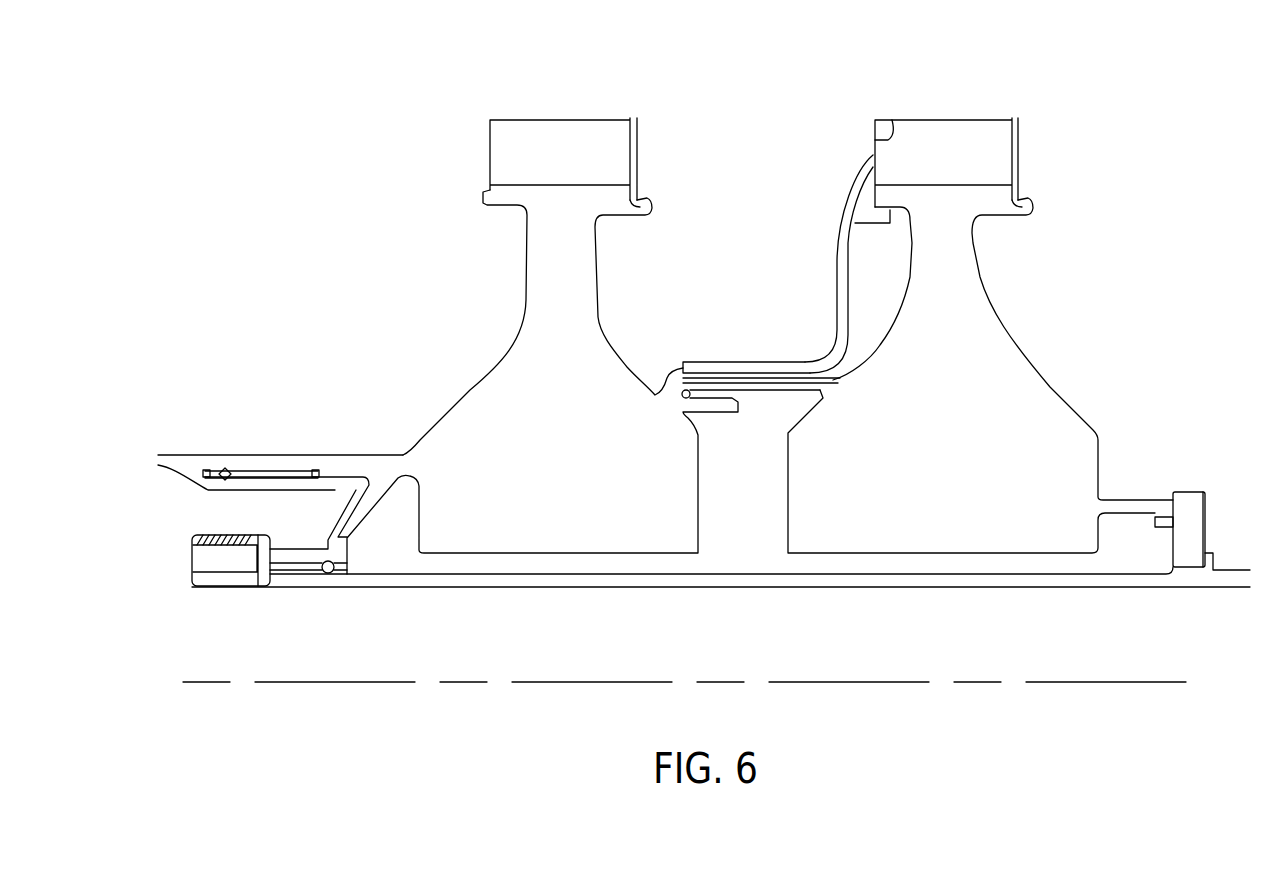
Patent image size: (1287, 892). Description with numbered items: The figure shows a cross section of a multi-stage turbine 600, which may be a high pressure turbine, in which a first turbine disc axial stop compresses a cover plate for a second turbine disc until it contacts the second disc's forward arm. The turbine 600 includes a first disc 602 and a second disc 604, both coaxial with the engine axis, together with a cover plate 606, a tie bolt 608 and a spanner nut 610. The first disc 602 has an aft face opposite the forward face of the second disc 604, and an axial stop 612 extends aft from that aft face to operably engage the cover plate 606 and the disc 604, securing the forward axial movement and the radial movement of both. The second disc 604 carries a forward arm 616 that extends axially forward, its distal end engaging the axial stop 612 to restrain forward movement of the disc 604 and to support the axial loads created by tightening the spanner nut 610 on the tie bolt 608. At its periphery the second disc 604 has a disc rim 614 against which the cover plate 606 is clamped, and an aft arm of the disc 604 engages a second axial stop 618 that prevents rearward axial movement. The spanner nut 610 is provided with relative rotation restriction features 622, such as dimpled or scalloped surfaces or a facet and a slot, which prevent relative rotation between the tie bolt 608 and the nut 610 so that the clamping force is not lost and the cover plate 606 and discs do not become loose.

The multi-stage turbine 600 is at (238, 116).
The first disc 602 is at (542, 346).
The second disc 604 is at (980, 375).
The cover plate 606 is at (845, 202).
The tie bolt 608 is at (657, 592).
The spanner nut 610 is at (192, 573).
The axial stop 612 is at (665, 380).
The disc rim 614 is at (892, 120).
The forward arm 616 is at (748, 398).
The second axial stop 618 is at (1177, 480).
The relative rotation restriction features 622 is at (223, 558).